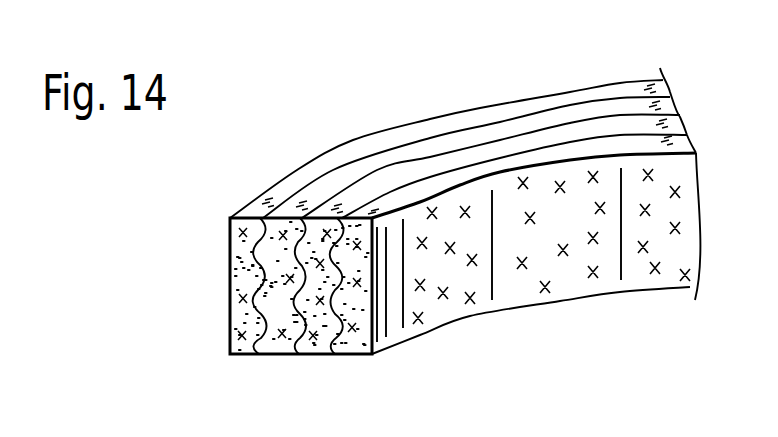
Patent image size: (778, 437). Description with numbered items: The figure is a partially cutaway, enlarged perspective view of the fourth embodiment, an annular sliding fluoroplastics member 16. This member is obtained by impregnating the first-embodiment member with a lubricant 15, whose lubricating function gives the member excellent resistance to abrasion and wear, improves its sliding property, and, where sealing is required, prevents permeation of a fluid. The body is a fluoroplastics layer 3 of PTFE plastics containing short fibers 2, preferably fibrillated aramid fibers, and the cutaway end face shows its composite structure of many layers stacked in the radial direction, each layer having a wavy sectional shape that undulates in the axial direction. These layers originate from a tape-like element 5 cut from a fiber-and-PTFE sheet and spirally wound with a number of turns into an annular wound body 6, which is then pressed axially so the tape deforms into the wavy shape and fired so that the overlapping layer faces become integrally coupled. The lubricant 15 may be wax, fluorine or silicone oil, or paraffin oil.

The annular sliding fluoroplastics member 16 is at (341, 141).
The annular wound body 6 is at (449, 111).
The tape-like element 5 is at (533, 120).
The fluoroplastics layer 3 is at (322, 350).
The short fibers 2 is at (292, 309).
The lubricant 15 is at (356, 328).